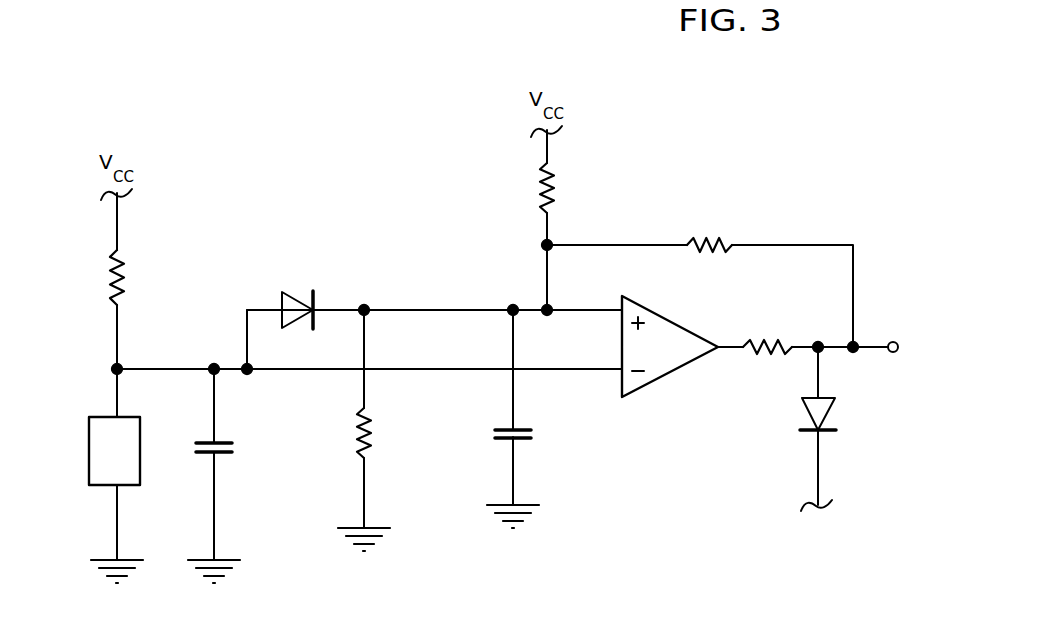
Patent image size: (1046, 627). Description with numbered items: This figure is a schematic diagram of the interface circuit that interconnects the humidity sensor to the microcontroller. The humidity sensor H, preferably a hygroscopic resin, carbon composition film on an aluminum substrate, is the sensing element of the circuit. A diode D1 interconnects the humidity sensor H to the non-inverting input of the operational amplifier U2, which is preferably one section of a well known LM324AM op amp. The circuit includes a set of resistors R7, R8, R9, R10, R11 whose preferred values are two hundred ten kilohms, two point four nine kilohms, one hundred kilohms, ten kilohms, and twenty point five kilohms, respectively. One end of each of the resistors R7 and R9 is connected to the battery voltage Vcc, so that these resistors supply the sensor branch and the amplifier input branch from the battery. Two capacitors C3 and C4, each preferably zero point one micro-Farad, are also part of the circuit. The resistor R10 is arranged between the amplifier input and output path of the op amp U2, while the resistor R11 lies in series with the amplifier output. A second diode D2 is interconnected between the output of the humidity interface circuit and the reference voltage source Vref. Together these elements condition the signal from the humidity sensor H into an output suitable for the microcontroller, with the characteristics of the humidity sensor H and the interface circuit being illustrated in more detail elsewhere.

The resistor R7 is at (124, 269).
The humidity sensor H is at (116, 476).
The capacitor C3 is at (232, 449).
The diode D1 is at (295, 298).
The resistor R8 is at (371, 433).
The capacitor C4 is at (531, 435).
The resistor R9 is at (555, 189).
The resistor R10 is at (709, 235).
The operational amplifier U2 is at (682, 346).
The resistor R11 is at (763, 339).
The diode D2 is at (802, 408).